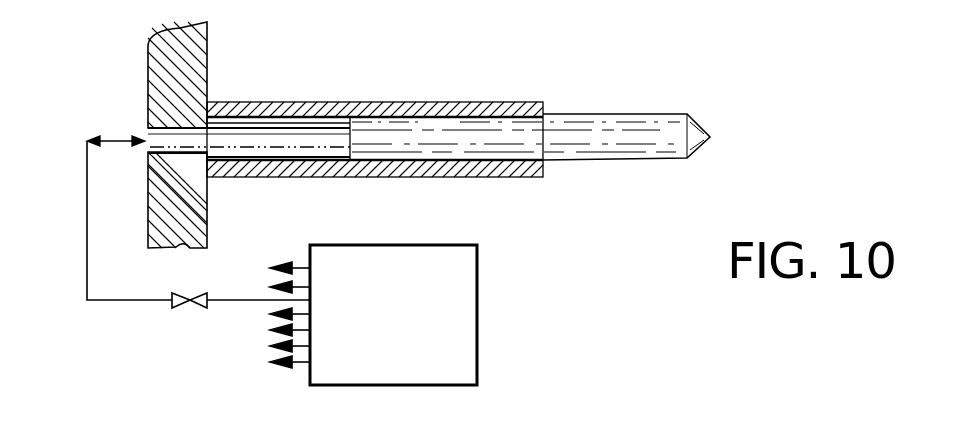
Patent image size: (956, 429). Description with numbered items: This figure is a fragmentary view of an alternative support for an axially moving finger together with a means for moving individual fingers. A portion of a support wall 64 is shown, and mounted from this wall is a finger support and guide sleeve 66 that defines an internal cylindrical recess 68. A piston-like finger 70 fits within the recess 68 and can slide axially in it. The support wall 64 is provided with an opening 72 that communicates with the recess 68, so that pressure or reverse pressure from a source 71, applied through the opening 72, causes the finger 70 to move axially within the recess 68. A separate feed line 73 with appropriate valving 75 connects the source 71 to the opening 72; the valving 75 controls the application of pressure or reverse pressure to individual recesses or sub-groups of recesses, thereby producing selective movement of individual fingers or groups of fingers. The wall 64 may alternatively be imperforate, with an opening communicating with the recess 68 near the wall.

The support wall 64 is at (148, 93).
The finger support and guide sleeve 66 is at (347, 102).
The internal cylindrical recess 68 is at (247, 158).
The piston-like finger 70 is at (603, 160).
The pressure or reverse pressure source 71 is at (405, 245).
The opening 72 is at (148, 148).
The feed line 73 is at (87, 257).
The valving 75 is at (208, 303).